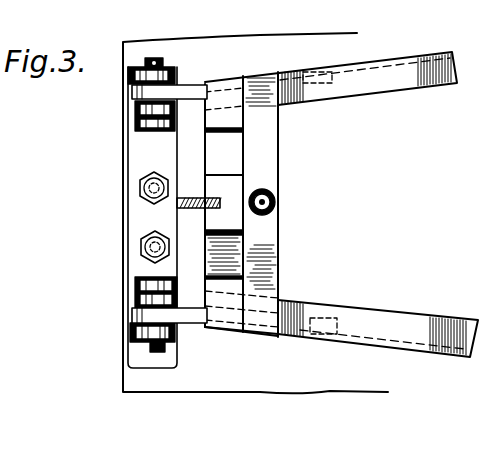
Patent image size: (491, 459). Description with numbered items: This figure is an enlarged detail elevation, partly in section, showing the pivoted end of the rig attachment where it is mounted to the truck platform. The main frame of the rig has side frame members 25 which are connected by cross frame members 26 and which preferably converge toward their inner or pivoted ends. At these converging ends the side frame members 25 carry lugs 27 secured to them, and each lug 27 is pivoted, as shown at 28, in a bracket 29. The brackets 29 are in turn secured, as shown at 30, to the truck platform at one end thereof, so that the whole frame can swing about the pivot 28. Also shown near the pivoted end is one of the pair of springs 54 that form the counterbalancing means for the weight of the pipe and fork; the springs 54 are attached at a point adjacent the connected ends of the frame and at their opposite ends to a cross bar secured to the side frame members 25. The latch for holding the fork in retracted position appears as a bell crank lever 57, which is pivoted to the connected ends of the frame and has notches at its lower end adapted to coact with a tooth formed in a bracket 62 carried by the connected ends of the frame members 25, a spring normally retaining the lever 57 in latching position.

The side frame members 25 is at (380, 83).
The cross frame members 26 is at (263, 148).
The lugs 27 is at (190, 90).
The pivot 28 is at (153, 58).
The brackets 29 is at (128, 112).
The securing means 30 is at (143, 245).
The springs 54 is at (273, 213).
The bell crank lever 57 is at (187, 197).
The bracket 62 is at (210, 258).